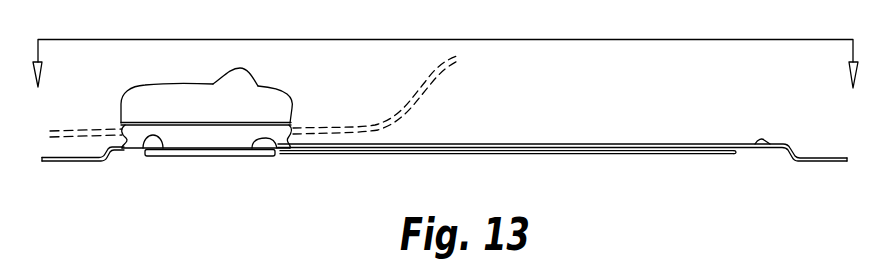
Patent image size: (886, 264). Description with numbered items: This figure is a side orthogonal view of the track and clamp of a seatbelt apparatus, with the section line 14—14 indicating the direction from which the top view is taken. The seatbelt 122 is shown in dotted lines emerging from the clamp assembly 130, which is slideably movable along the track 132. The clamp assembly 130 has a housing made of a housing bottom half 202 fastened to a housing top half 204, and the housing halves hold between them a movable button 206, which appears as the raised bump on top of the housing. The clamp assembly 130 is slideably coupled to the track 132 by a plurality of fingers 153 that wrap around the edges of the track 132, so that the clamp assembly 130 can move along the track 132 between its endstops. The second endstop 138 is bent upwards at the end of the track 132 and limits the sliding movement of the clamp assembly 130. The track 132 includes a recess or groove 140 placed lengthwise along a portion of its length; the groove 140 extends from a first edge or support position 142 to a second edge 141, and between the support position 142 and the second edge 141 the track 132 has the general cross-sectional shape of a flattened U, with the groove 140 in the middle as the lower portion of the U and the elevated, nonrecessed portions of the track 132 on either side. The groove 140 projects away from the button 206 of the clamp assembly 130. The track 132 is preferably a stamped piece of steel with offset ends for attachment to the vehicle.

The section line 14 is at (445, 45).
The seatbelt 122 is at (422, 86).
The clamp assembly 130 is at (295, 104).
The track 132 is at (748, 143).
The second endstop 138 is at (772, 144).
The groove 140 is at (615, 155).
The second edge 141 is at (737, 156).
The support position 142 is at (277, 155).
The fingers 153 is at (195, 157).
The housing bottom half 202 is at (118, 126).
The housing top half 204 is at (130, 103).
The button 206 is at (250, 63).